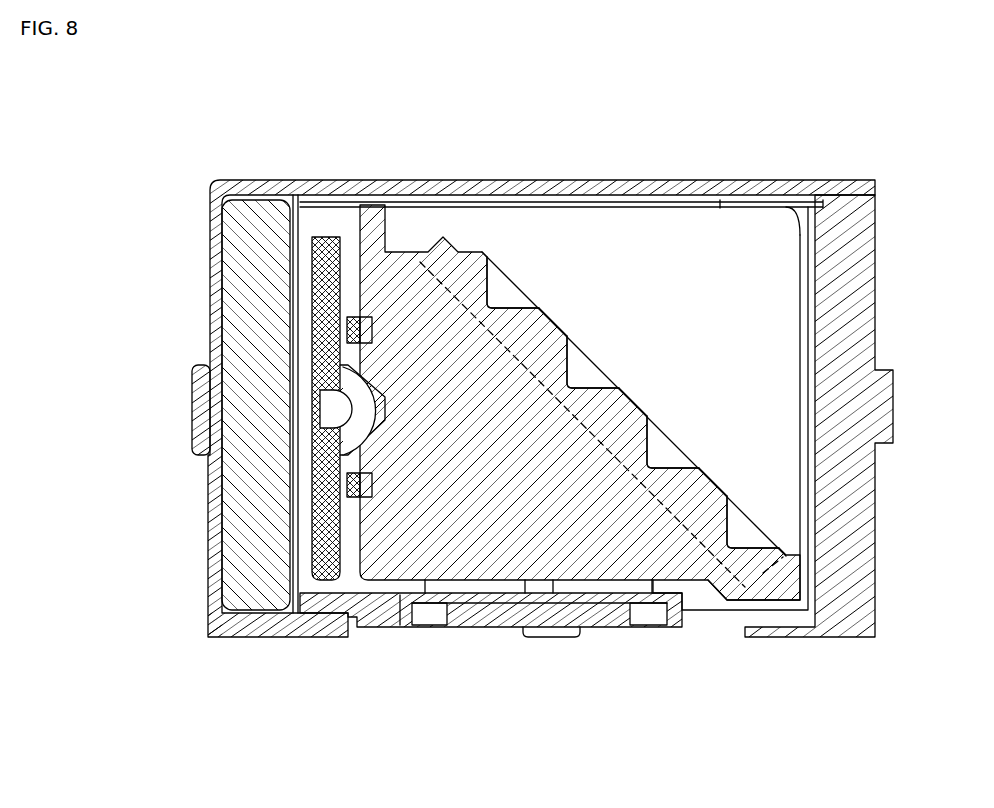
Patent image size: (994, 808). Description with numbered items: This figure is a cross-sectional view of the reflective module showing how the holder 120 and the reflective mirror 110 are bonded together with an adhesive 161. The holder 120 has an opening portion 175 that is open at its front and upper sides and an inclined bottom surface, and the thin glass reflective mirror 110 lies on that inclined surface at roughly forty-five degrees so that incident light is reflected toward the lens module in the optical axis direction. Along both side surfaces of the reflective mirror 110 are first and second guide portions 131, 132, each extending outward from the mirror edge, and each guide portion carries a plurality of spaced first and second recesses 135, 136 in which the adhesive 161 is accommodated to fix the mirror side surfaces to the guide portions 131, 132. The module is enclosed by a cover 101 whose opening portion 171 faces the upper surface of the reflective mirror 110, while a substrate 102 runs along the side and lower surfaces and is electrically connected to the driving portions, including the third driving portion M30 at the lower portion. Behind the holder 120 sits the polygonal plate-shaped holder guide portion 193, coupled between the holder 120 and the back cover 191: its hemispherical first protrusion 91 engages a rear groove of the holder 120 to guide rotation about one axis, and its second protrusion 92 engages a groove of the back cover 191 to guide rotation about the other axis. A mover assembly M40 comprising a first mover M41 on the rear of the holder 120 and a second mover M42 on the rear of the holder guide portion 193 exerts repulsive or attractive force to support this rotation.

The cover 101 is at (313, 188).
The substrate 102 is at (853, 240).
The reflective mirror 110 is at (450, 236).
The holder 120 is at (535, 343).
The first guide portion 131 is at (634, 328).
The second guide portion 132 is at (632, 392).
The first recesses 135 is at (593, 294).
The second recesses 136 is at (507, 280).
The adhesive 161 is at (750, 527).
The opening portion 171 is at (797, 178).
The opening portion 175 is at (763, 252).
The back cover 191 is at (238, 256).
The holder guide portion 193 is at (353, 408).
The first protrusion 91 is at (372, 407).
The second protrusion 92 is at (305, 270).
The third driving portion M30 is at (468, 645).
The mover assembly M40 is at (240, 408).
The first mover M41 is at (310, 346).
The second mover M42 is at (355, 323).